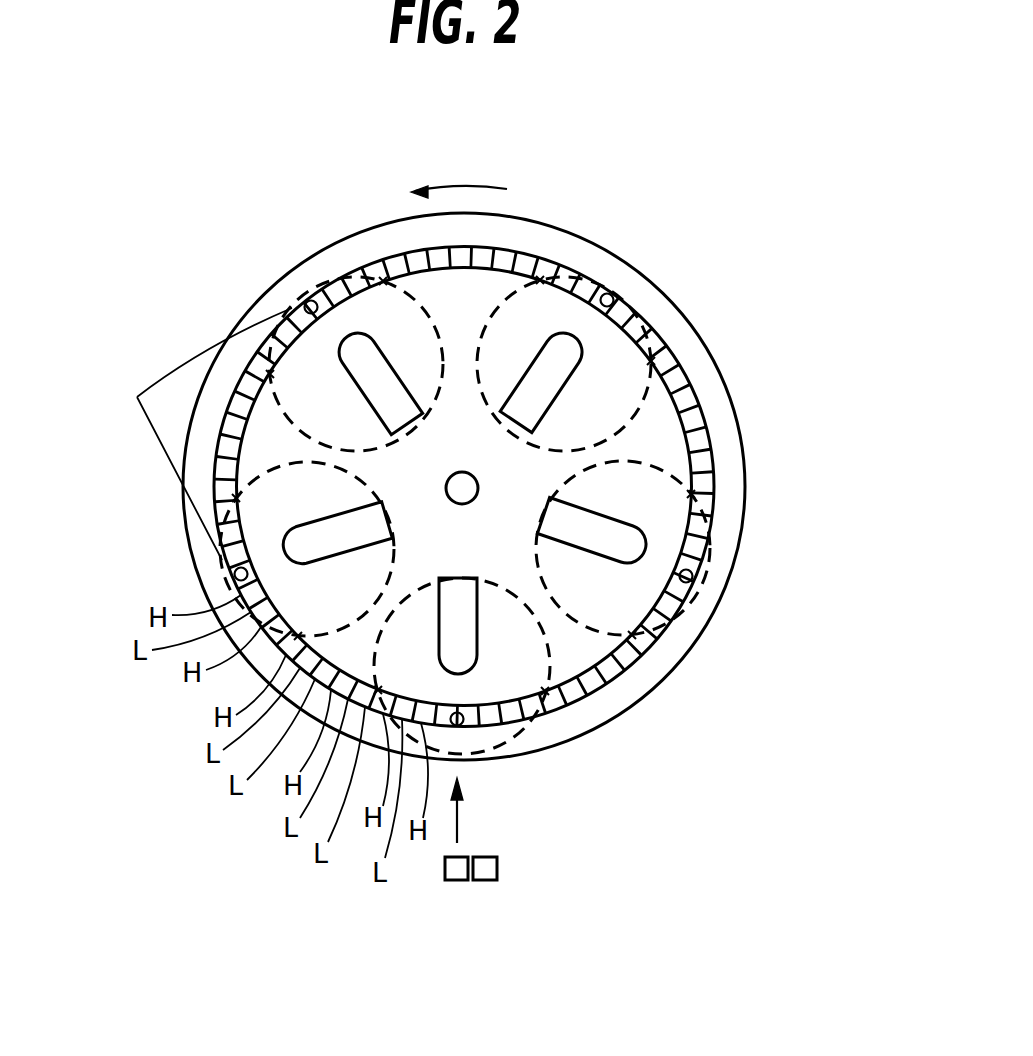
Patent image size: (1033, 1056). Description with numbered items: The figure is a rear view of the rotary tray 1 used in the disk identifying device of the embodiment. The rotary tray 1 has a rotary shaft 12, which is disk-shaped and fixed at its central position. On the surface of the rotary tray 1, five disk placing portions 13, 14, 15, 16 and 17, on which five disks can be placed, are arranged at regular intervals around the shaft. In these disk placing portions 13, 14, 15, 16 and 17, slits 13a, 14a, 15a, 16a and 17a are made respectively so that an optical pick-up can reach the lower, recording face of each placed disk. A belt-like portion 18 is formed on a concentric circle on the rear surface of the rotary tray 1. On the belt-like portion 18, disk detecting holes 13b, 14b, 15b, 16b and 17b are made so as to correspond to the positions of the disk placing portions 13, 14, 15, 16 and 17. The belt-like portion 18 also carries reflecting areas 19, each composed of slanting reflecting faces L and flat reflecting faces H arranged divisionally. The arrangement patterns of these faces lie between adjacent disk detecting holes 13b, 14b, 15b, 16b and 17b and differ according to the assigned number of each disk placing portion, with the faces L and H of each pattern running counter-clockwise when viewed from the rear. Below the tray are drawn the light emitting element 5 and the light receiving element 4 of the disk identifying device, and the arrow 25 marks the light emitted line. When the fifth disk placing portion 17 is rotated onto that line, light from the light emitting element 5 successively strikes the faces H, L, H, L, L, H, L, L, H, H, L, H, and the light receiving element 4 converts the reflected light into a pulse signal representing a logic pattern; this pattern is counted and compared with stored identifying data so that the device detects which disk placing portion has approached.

The rotary tray 1 is at (369, 235).
The light receiving element 4 is at (486, 880).
The light emitting element 5 is at (456, 880).
The rotary shaft 12 is at (470, 503).
The disk placing portion 13 is at (545, 700).
The slit 13a is at (463, 633).
The disk detecting hole 13b is at (461, 727).
The disk placing portion 14 is at (688, 512).
The slit 14a is at (577, 518).
The disk detecting hole 14b is at (693, 580).
The disk placing portion 15 is at (637, 307).
The slit 15a is at (547, 370).
The disk detecting hole 15b is at (612, 293).
The disk placing portion 16 is at (293, 373).
The slit 16a is at (377, 370).
The disk detecting hole 16b is at (308, 303).
The disk placing portion 17 is at (273, 642).
The slit 17a is at (310, 545).
The disk detecting hole 17b is at (234, 575).
The belt-like portion 18 is at (607, 690).
The reflecting areas 19 is at (195, 434).
The light emitted line 25 is at (460, 827).